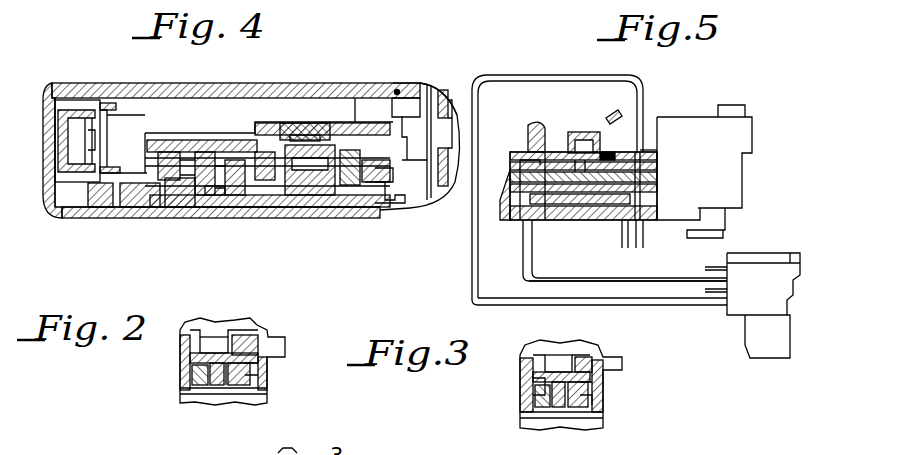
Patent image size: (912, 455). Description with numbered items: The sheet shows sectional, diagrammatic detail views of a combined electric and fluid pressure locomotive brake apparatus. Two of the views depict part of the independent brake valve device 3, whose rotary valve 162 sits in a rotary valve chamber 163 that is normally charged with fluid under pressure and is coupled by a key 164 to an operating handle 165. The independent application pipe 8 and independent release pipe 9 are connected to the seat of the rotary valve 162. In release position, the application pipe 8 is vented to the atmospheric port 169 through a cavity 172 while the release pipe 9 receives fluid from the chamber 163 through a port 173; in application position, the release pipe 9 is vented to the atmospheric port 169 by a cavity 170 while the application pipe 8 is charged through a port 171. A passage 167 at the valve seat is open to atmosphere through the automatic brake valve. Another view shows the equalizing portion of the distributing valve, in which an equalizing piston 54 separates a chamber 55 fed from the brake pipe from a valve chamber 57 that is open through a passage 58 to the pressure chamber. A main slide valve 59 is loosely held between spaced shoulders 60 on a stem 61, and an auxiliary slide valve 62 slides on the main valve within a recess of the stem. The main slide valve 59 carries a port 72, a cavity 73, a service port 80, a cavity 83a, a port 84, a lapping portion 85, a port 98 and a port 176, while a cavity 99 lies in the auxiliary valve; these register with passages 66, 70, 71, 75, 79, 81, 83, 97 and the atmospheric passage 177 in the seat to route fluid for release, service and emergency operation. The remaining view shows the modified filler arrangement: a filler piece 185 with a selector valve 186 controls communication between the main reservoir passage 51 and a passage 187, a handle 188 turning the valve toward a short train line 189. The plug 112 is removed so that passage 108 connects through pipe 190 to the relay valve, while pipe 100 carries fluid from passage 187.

In FIG. 2, the independent brake valve device 3 is at (277, 405).
In FIG. 3, the independent brake valve device 3 is at (529, 339).
In FIG. 2, the independent application pipe 8 is at (212, 378).
In FIG. 3, the independent application pipe 8 is at (556, 408).
In FIG. 2, the independent release pipe 9 is at (238, 380).
In FIG. 3, the independent release pipe 9 is at (576, 408).
In FIG. 5, the main reservoir pipe 51 is at (518, 165).
In FIG. 4, the equalizing piston 54 is at (441, 86).
In FIG. 4, the equalizing piston chamber 55 is at (449, 105).
In FIG. 4, the valve chamber 57 is at (415, 100).
In FIG. 4, the passage 58 is at (62, 128).
In FIG. 4, the main slide valve 59 is at (158, 140).
In FIG. 4, the spaced shoulders 60 is at (147, 146).
In FIG. 4, the stem 61 is at (373, 120).
In FIG. 4, the auxiliary slide valve 62 is at (283, 123).
In FIG. 4, the passage 66 is at (232, 210).
In FIG. 4, the passage 70 is at (263, 198).
In FIG. 4, the passage 71 is at (112, 200).
In FIG. 4, the port 72 is at (172, 152).
In FIG. 4, the cavity 73 is at (350, 145).
In FIG. 4, the passage 75 is at (370, 196).
In FIG. 4, the passage 79 is at (348, 195).
In FIG. 4, the service port 80 is at (240, 152).
In FIG. 4, the passage 81 is at (290, 198).
In FIG. 4, the passage 83 is at (185, 207).
In FIG. 4, the cavity 83a is at (218, 207).
In FIG. 4, the port 84 is at (385, 172).
In FIG. 4, the portion of main slide valve 85 is at (352, 206).
In FIG. 4, the passage 97 is at (322, 196).
In FIG. 4, the port 98 is at (305, 124).
In FIG. 4, the cavity 99 is at (292, 128).
In FIG. 5, the pipe 100 is at (586, 279).
In FIG. 5, the passage 108 is at (650, 160).
In FIG. 5, the plug 112 is at (642, 151).
In FIG. 2, the rotary valve 162 is at (190, 370).
In FIG. 3, the rotary valve 162 is at (578, 362).
In FIG. 2, the rotary valve chamber 163 is at (250, 340).
In FIG. 3, the rotary valve chamber 163 is at (594, 360).
In FIG. 2, the key 164 is at (216, 345).
In FIG. 3, the key 164 is at (557, 362).
In FIG. 2, the operating handle 165 is at (200, 449).
In FIG. 2, the passage 167 is at (190, 392).
In FIG. 3, the passage 167 is at (532, 398).
In FIG. 2, the atmospheric port 169 is at (262, 391).
In FIG. 3, the atmospheric port 169 is at (603, 411).
In FIG. 3, the cavity 170 is at (595, 388).
In FIG. 3, the port 171 is at (530, 380).
In FIG. 2, the cavity 172 is at (258, 368).
In FIG. 2, the port 173 is at (240, 345).
In FIG. 4, the port 176 is at (202, 152).
In FIG. 4, the atmospheric passage 177 is at (156, 205).
In FIG. 5, the filler piece 185 is at (606, 150).
In FIG. 5, the selector valve 186 is at (581, 140).
In FIG. 5, the passage 187 is at (540, 160).
In FIG. 5, the handle 188 is at (614, 106).
In FIG. 5, the line 189 is at (544, 135).
In FIG. 5, the pipe 190 is at (472, 268).